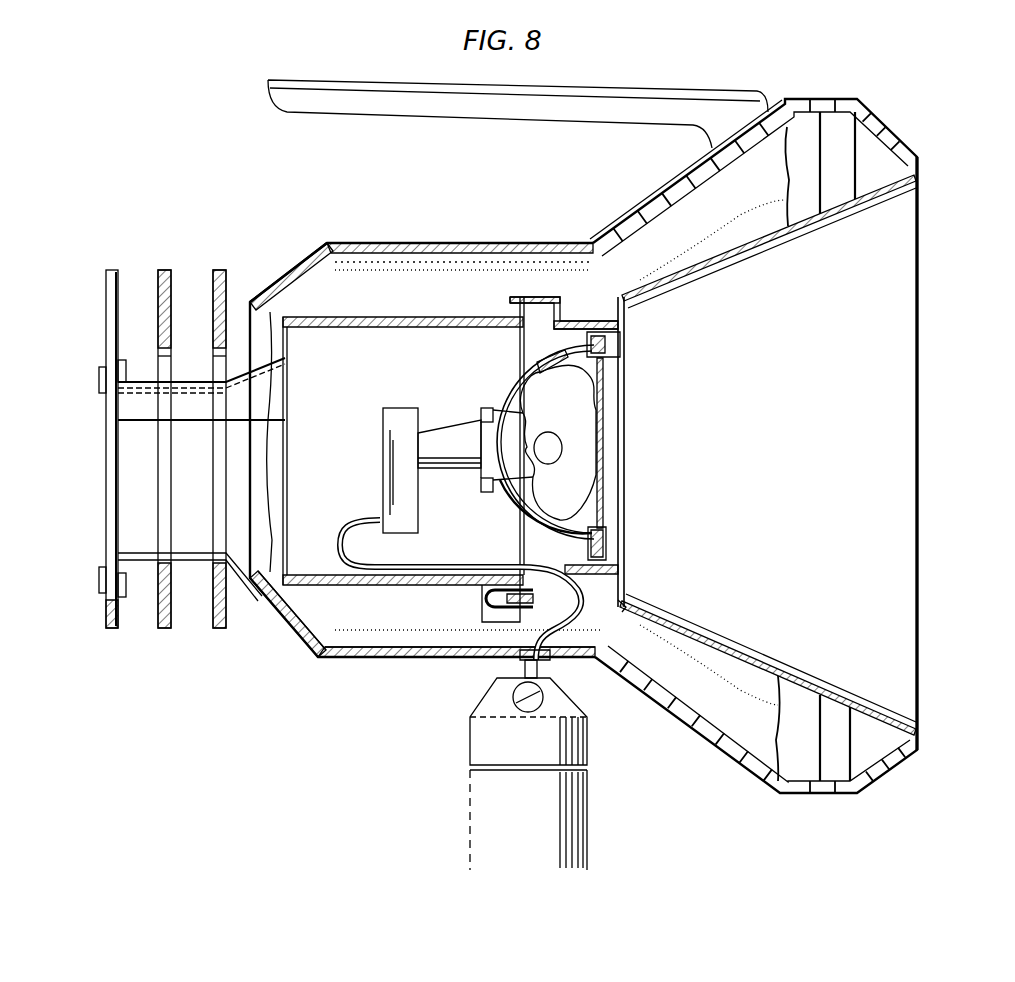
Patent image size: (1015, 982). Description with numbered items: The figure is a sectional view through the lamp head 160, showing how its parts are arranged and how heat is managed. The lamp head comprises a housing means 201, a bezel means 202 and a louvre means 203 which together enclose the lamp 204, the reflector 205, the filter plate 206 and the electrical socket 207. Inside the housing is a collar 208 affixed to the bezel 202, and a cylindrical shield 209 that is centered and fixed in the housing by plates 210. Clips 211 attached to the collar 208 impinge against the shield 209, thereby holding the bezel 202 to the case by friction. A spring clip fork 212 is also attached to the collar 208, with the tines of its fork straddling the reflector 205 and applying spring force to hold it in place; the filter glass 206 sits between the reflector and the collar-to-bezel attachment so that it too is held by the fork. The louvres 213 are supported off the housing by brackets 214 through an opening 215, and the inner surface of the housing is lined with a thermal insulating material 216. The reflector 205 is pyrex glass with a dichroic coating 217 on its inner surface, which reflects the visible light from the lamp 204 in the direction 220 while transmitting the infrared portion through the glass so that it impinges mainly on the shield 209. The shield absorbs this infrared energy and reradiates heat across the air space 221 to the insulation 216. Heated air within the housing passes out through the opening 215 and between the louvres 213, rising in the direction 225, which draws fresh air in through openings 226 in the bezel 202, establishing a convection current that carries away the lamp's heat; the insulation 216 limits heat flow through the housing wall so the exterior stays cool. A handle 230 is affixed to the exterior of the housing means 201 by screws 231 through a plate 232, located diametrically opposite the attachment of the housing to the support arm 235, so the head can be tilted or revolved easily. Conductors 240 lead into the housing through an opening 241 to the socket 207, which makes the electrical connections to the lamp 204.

The lamp head 160 is at (536, 253).
The housing means 201 is at (434, 250).
The bezel means 202 is at (920, 155).
The louvre means 203 is at (105, 527).
The lamp 204 is at (556, 456).
The reflector 205 is at (600, 539).
The filter plate 206 is at (606, 374).
The electrical socket 207 is at (403, 408).
The collar 208 is at (513, 292).
The cylindrical shield 209 is at (341, 313).
The plates 210 is at (367, 612).
The clips 211 is at (496, 609).
The spring clip fork 212 is at (492, 492).
The louvres 213 is at (160, 281).
The brackets 214 is at (130, 410).
The opening 215 is at (250, 510).
The thermal insulating material 216 is at (388, 652).
The dichroic coating 217 is at (600, 410).
The direction 220 is at (1000, 450).
The air space 221 is at (378, 305).
The direction 225 is at (193, 293).
The openings 226 is at (622, 309).
The handle 230 is at (702, 96).
The screws 231 is at (803, 100).
The plate 232 is at (748, 126).
The support arm 235 is at (572, 822).
The conductors 240 is at (622, 603).
The opening 241 is at (520, 677).